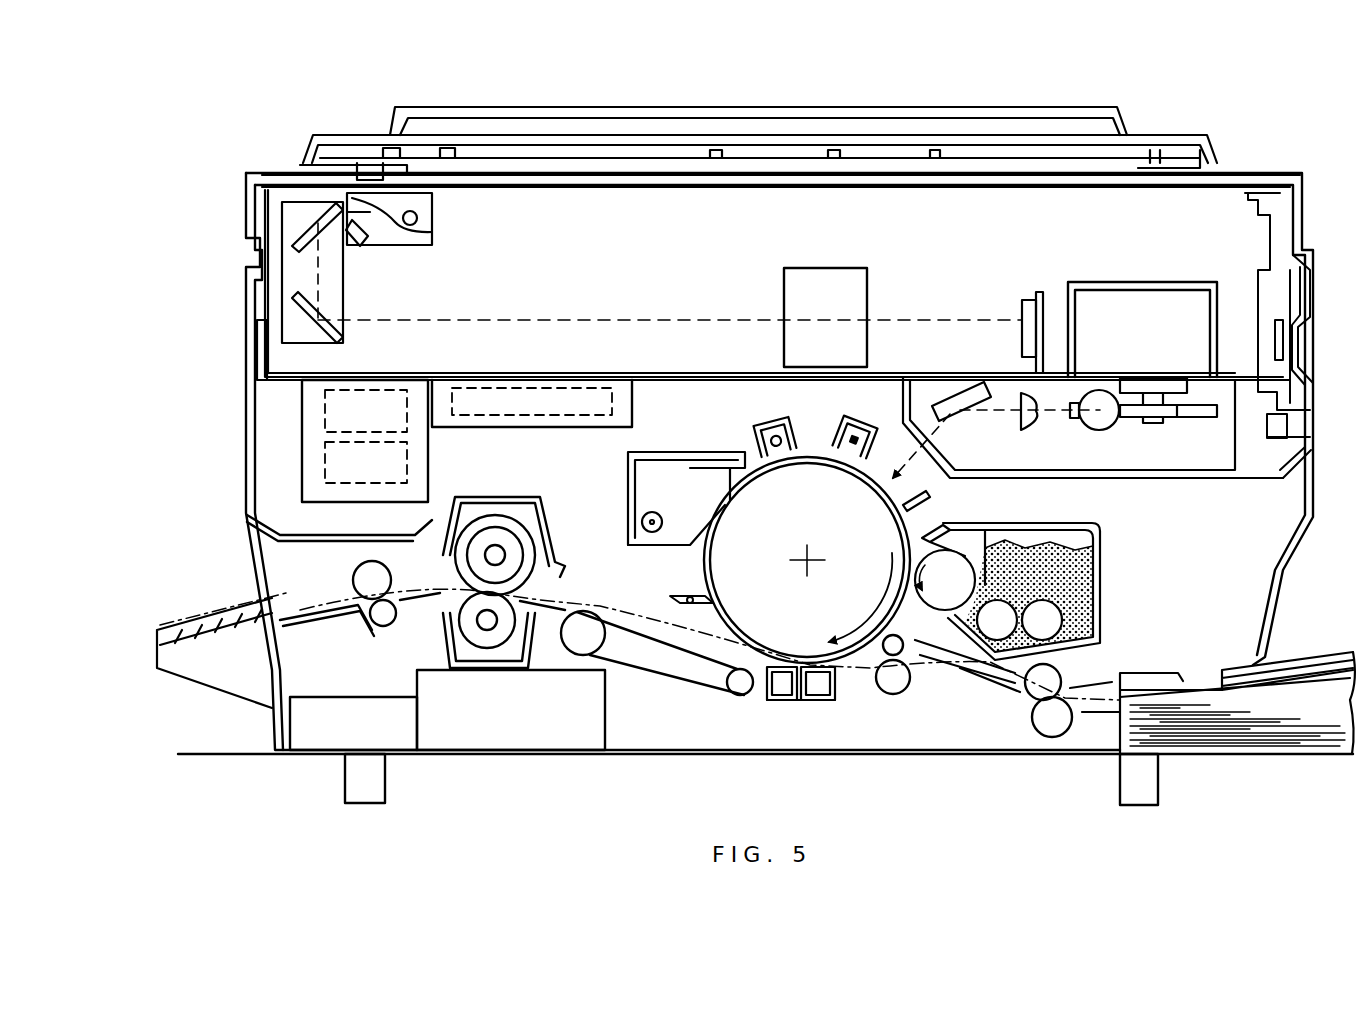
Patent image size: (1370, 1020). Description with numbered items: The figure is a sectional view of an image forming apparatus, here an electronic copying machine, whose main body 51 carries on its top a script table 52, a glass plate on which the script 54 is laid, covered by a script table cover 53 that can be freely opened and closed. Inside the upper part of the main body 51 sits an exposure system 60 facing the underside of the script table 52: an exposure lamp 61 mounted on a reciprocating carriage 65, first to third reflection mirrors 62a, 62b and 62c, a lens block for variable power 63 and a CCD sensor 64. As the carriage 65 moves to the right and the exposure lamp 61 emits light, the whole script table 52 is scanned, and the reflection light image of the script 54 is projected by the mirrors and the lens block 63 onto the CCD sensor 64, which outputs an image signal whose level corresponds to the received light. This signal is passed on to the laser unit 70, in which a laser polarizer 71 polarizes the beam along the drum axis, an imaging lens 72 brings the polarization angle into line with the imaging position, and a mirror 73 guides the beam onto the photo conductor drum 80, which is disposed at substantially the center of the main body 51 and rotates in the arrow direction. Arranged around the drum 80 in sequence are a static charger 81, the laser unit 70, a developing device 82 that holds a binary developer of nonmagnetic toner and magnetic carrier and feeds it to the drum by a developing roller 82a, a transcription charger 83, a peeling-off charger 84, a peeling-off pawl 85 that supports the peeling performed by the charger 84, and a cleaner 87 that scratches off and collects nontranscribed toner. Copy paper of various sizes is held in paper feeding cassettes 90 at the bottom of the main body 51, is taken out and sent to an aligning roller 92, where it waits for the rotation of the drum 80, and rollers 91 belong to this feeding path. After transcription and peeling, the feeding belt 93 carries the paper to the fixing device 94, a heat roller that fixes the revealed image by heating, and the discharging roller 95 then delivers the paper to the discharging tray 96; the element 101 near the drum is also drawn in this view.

The main body 51 is at (1262, 155).
The script table 52 is at (701, 190).
The script table cover 53 is at (1014, 105).
The script 54 is at (600, 175).
The exposure system 60 is at (922, 233).
The exposure lamp 61 is at (432, 240).
The first reflection mirror 62a is at (372, 246).
The second reflection mirror 62b is at (300, 228).
The third reflection mirror 62c is at (345, 340).
The lens block for variable power 63 is at (818, 268).
The CCD sensor 64 is at (1031, 292).
The carriage 65 is at (432, 215).
The laser unit 70 is at (1130, 456).
The laser polarizer 71 is at (1195, 417).
The imaging lens 72 is at (1036, 425).
The mirror 73 is at (963, 420).
The photo conductor drum 80 is at (816, 452).
The static charger 81 is at (860, 426).
The developing device 82 is at (1020, 523).
The developing roller 82a is at (950, 612).
The transcription charger 83 is at (768, 420).
The peeling-off charger 84 is at (782, 702).
The peeling-off pawl 85 is at (670, 597).
The cleaner 87 is at (676, 452).
The paper feeding cassette 90 is at (1341, 651).
The paper feed rollers 91 is at (1052, 738).
The aligning roller 92 is at (893, 694).
The feeding belt 93 is at (640, 690).
The fixing device 94 is at (515, 528).
The discharging roller 95 is at (353, 578).
The discharging tray 96 is at (180, 690).
The eraser lamp 101 is at (930, 497).